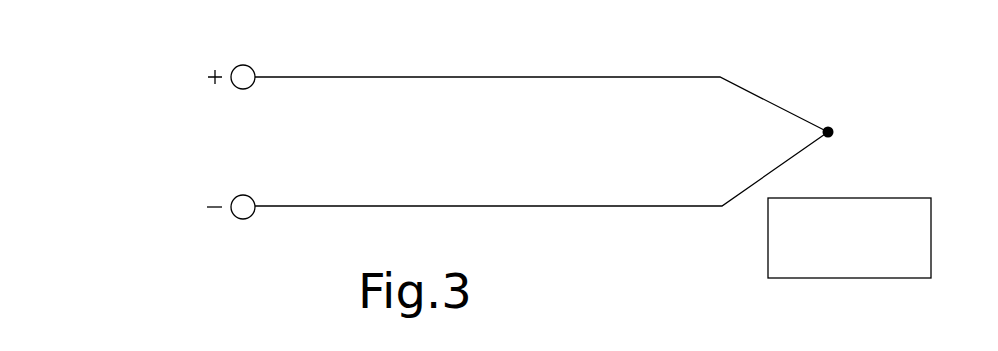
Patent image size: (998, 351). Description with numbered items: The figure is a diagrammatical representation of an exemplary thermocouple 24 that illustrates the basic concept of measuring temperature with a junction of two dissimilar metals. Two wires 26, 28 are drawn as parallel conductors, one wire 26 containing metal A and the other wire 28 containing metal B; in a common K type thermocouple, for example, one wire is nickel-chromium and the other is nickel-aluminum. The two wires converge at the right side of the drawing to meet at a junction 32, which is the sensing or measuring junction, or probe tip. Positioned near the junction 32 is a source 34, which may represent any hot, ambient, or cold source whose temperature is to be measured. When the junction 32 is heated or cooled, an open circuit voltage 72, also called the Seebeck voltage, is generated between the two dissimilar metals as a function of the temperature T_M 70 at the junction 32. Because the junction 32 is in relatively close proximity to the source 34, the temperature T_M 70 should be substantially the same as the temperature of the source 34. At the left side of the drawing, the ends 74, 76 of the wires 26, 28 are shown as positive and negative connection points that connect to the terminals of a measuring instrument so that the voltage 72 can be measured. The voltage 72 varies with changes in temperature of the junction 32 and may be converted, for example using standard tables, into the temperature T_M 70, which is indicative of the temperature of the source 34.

The thermocouple 24 is at (711, 53).
The wire 26 is at (604, 76).
The wire 28 is at (607, 209).
The junction 32 is at (830, 126).
The source 34 is at (881, 197).
The temperature T_M 70 is at (883, 123).
The open circuit voltage 72 is at (191, 136).
The end of wire 74 is at (244, 74).
The end of wire 76 is at (243, 219).